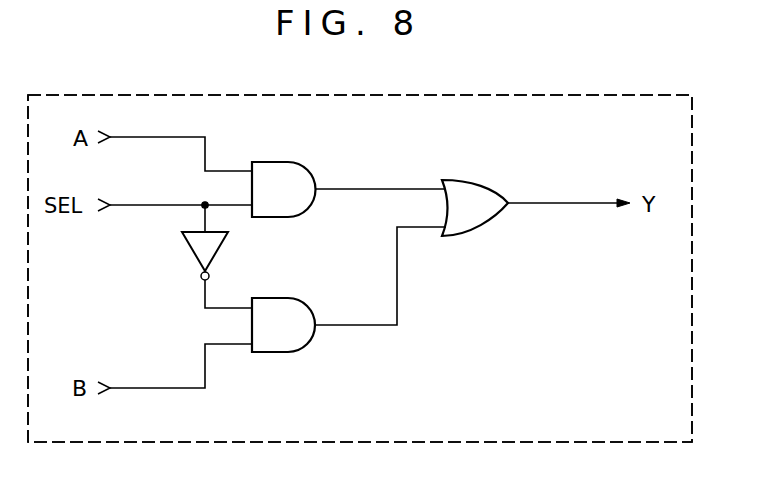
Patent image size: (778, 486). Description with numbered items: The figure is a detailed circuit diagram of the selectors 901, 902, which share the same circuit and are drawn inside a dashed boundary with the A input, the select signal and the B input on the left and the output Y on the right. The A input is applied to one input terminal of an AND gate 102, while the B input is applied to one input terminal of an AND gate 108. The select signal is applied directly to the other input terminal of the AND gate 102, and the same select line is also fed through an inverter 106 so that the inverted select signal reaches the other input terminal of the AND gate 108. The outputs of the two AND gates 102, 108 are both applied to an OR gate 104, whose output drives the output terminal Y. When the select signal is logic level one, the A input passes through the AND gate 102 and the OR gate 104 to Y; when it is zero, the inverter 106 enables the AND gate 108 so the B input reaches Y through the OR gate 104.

The selector 901 is at (180, 94).
The selector 902 is at (360, 246).
The AND gate 102 is at (278, 162).
The OR gate 104 is at (459, 237).
The inverter 106 is at (191, 253).
The AND gate 108 is at (272, 352).